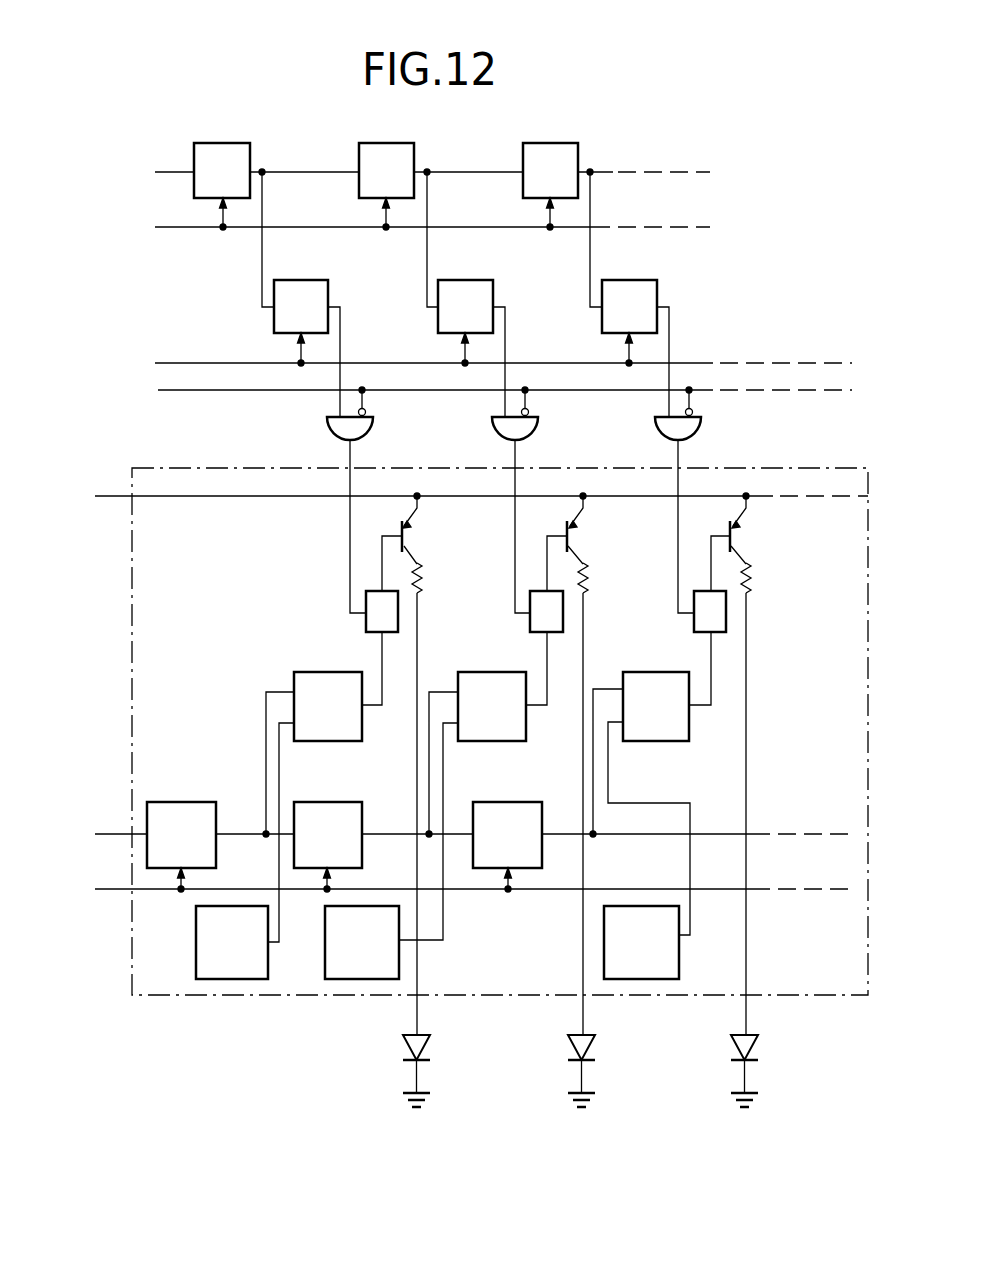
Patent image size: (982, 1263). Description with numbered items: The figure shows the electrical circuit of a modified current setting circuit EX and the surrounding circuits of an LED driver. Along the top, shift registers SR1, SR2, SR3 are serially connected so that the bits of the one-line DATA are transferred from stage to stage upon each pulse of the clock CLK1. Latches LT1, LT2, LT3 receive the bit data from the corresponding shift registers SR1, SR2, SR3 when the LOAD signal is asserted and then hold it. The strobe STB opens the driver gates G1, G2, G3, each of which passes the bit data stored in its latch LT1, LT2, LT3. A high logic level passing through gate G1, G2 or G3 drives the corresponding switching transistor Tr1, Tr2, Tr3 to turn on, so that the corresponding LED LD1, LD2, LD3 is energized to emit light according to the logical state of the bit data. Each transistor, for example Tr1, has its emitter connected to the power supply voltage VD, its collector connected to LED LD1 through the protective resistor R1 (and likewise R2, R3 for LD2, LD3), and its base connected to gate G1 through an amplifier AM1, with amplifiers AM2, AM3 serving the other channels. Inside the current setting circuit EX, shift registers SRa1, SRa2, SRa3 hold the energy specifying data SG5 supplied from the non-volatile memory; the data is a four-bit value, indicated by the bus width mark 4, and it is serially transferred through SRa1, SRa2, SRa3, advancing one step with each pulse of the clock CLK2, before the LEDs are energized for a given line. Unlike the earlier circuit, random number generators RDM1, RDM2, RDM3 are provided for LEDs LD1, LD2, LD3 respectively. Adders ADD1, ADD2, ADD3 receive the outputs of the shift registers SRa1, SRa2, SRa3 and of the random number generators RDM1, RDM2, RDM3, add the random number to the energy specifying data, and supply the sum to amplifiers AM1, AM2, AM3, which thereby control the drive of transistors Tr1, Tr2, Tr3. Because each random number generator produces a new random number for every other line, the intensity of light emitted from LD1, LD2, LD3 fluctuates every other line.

The shift register SR1 is at (222, 170).
The shift register SR2 is at (386, 170).
The shift register SR3 is at (550, 170).
The latch LT1 is at (301, 306).
The latch LT2 is at (465, 306).
The latch LT3 is at (629, 306).
The driver gate G1 is at (360, 419).
The driver gate G2 is at (525, 419).
The driver gate G3 is at (689, 419).
The switching transistor Tr1 is at (425, 530).
The switching transistor Tr2 is at (590, 530).
The switching transistor Tr3 is at (753, 530).
The protective resistor R1 is at (431, 578).
The protective resistor R2 is at (597, 578).
The protective resistor R3 is at (760, 578).
The amplifier AM1 is at (363, 624).
The amplifier AM2 is at (527, 624).
The amplifier AM3 is at (692, 624).
The adder ADD1 is at (328, 706).
The adder ADD2 is at (492, 706).
The adder ADD3 is at (656, 706).
The shift register SRa1 is at (181, 835).
The shift register SRa2 is at (328, 835).
The shift register SRa3 is at (507, 835).
The random number generator RDM1 is at (232, 942).
The random number generator RDM2 is at (362, 942).
The random number generator RDM3 is at (641, 942).
The LED LD1 is at (439, 1071).
The LED LD2 is at (604, 1071).
The LED LD3 is at (767, 1071).
The current setting circuit EX is at (778, 462).
The 4-bit bus 4 is at (702, 712).
The one-line DATA is at (401, 172).
The clock CLK1 is at (402, 218).
The LOAD signal LOAD is at (472, 354).
The strobe signal STB is at (482, 393).
The power supply voltage VD is at (463, 496).
The energy specifying data SG5 is at (446, 834).
The clock CLK2 is at (440, 884).